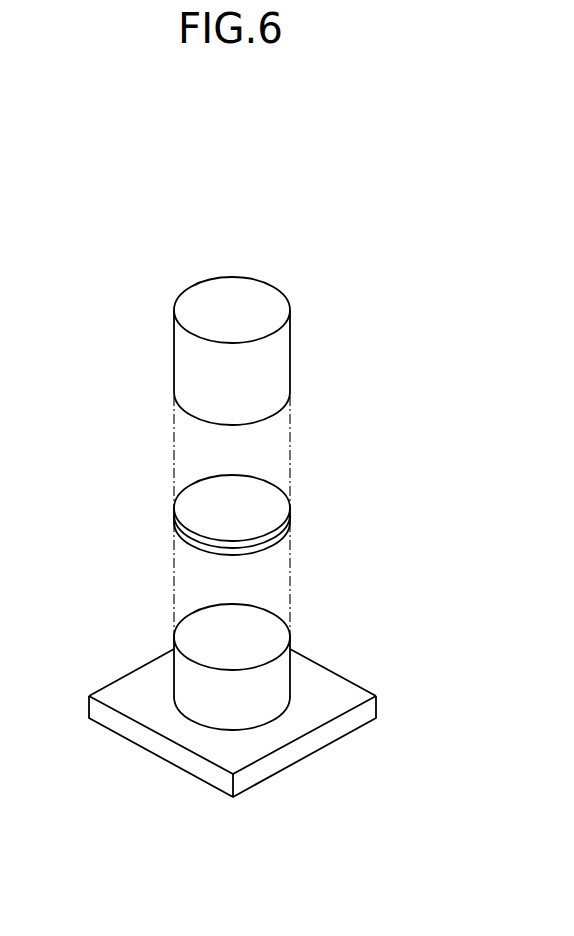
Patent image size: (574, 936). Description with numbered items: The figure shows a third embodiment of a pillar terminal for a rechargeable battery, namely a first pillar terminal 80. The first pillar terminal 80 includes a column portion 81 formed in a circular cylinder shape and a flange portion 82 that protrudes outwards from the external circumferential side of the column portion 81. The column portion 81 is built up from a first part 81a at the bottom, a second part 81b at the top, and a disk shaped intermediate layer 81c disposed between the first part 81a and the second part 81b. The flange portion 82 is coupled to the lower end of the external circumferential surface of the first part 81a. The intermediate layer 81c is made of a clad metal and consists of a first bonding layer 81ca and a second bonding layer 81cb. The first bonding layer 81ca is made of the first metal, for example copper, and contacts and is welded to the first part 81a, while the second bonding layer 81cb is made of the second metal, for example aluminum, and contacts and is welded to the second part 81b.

The first pillar terminal 80 is at (140, 296).
The column portion 81 is at (388, 359).
The first part 81a is at (265, 628).
The second part 81b is at (263, 370).
The intermediate layer 81c is at (303, 502).
The first bonding layer 81ca is at (192, 546).
The second bonding layer 81cb is at (192, 496).
The flange portion 82 is at (333, 692).